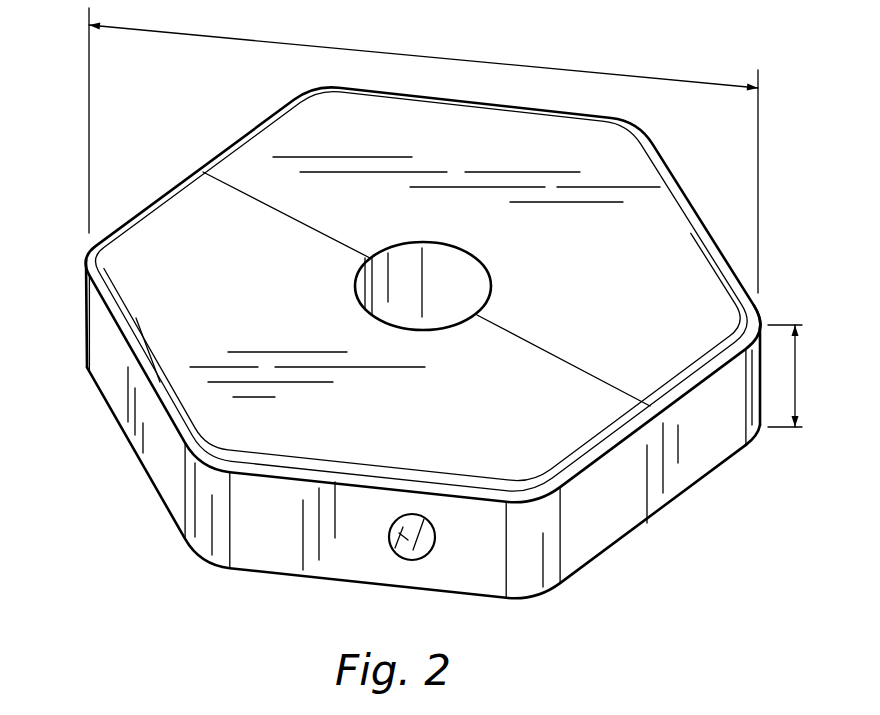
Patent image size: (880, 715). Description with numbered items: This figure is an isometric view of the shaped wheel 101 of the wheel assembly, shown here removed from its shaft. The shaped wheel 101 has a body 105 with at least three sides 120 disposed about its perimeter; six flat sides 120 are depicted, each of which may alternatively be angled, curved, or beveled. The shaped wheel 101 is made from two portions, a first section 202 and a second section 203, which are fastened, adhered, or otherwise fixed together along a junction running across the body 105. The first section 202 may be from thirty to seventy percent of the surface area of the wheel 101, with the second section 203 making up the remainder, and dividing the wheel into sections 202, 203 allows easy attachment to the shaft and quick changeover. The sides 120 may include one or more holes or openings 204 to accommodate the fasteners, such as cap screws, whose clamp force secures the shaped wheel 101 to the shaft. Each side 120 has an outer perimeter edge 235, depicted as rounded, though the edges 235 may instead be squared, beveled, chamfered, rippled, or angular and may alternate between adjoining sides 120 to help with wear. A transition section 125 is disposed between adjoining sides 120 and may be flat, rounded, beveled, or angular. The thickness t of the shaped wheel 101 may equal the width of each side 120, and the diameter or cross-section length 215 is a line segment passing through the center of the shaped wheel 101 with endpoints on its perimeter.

The shaped wheel 101 is at (412, 353).
The first section 202 is at (308, 125).
The second section 203 is at (205, 208).
The body 105 is at (250, 293).
The edge 235 is at (160, 385).
The side 120 is at (700, 450).
The transition section 125 is at (560, 598).
The opening 204 is at (404, 536).
The cross-section length 215 is at (522, 63).
The thickness t is at (797, 378).